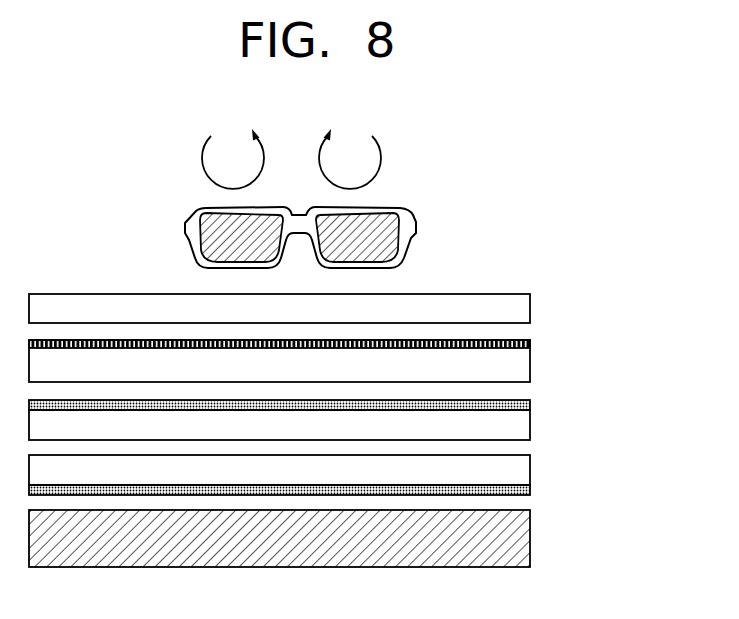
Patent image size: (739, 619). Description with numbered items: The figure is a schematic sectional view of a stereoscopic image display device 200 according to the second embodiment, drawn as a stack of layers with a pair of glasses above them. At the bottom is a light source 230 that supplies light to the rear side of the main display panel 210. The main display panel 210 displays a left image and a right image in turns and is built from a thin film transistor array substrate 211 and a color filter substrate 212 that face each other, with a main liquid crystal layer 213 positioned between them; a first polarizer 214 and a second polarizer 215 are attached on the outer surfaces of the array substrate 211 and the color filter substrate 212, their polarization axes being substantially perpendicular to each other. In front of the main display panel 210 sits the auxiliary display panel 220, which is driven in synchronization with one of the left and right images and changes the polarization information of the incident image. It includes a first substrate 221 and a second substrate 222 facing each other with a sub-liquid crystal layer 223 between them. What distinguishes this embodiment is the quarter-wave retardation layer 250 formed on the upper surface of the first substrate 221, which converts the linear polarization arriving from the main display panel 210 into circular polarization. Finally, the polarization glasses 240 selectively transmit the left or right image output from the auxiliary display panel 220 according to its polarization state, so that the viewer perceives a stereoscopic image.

The stereoscopic image display device 200 is at (548, 266).
The main display panel 210 is at (338, 447).
The thin film transistor array substrate 211 is at (526, 470).
The color filter substrate 212 is at (526, 428).
The main liquid crystal layer 213 is at (526, 450).
The first polarizer 214 is at (314, 490).
The second polarizer 215 is at (528, 405).
The auxiliary display panel 220 is at (338, 339).
The first substrate 221 is at (526, 373).
The second substrate 222 is at (526, 310).
The sub-liquid crystal layer 223 is at (526, 333).
The light source 230 is at (528, 538).
The polarization glasses 240 is at (424, 203).
The λ/4 retardation layer 250 is at (528, 345).